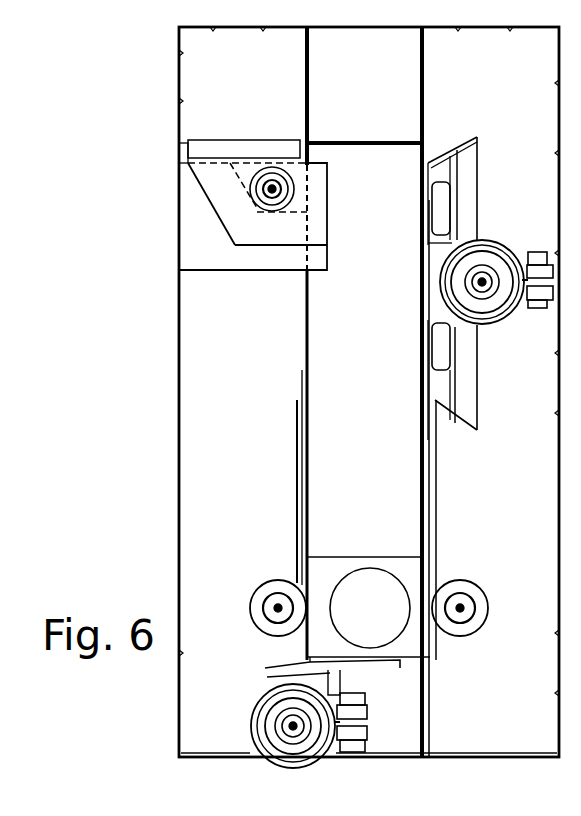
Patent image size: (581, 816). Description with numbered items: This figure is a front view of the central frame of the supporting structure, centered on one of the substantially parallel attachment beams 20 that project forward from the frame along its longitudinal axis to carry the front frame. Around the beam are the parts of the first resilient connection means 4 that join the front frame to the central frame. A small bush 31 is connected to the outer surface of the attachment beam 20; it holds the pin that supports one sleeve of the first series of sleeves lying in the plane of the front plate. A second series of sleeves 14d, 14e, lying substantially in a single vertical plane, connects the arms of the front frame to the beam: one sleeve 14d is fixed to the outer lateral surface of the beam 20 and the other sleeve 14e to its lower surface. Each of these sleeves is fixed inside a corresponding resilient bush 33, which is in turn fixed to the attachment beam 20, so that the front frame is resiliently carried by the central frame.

The first resilient connection means 4 is at (498, 242).
The sleeve 14d is at (490, 314).
The sleeve 14e is at (316, 748).
The attachment beam 20 is at (334, 331).
The small bush 31 is at (462, 583).
The resilient bush 33 is at (505, 298).